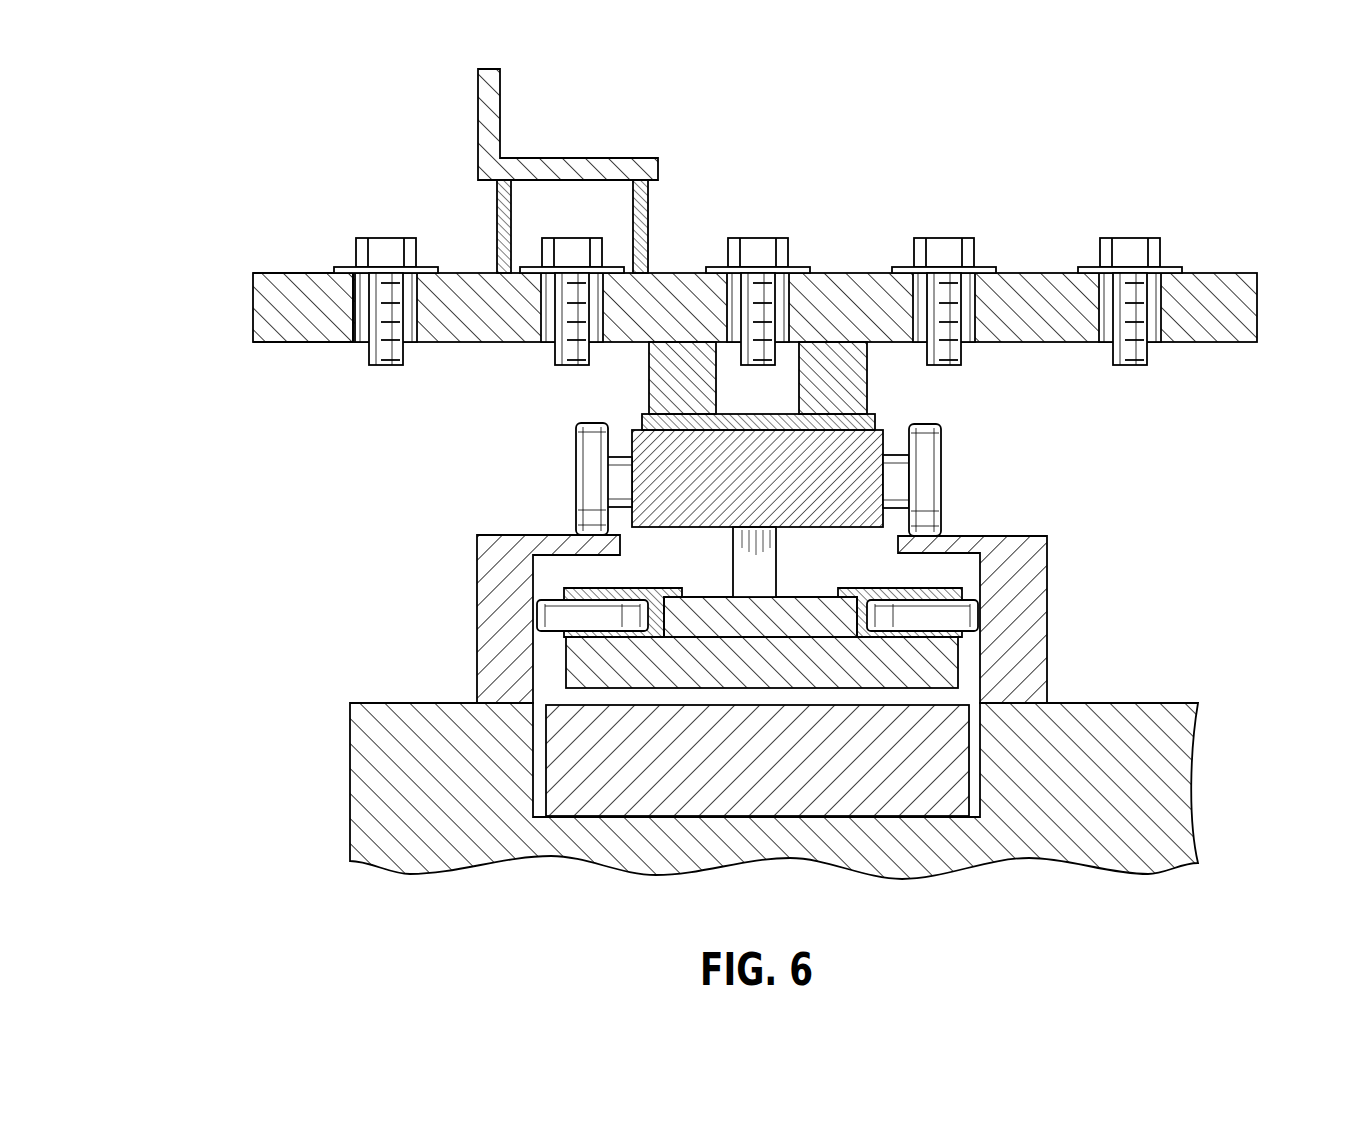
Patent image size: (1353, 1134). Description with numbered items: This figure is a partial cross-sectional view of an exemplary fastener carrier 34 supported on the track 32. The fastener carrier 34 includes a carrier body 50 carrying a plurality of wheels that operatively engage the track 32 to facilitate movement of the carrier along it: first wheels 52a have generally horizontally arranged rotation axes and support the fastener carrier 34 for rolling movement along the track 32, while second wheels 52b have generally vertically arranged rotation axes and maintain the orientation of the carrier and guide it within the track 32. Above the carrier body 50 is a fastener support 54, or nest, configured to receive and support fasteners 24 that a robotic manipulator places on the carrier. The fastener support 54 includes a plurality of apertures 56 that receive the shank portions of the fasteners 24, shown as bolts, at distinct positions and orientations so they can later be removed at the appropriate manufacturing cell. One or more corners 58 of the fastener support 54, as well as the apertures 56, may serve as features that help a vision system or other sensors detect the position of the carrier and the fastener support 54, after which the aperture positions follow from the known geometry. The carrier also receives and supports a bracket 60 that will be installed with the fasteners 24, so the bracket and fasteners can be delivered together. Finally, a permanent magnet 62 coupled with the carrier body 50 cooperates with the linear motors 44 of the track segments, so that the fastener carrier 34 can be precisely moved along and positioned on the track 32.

The fastener 24 is at (762, 237).
The track 32 is at (1128, 703).
The fastener carrier 34 is at (347, 186).
The linear motor 44 is at (969, 752).
The carrier body 50 is at (648, 390).
The first wheel 52a is at (576, 483).
The second wheel 52b is at (557, 617).
The fastener support 54 is at (1238, 273).
The aperture 56 is at (410, 330).
The corner 58 is at (253, 275).
The bracket 60 is at (608, 158).
The permanent magnet 62 is at (565, 672).